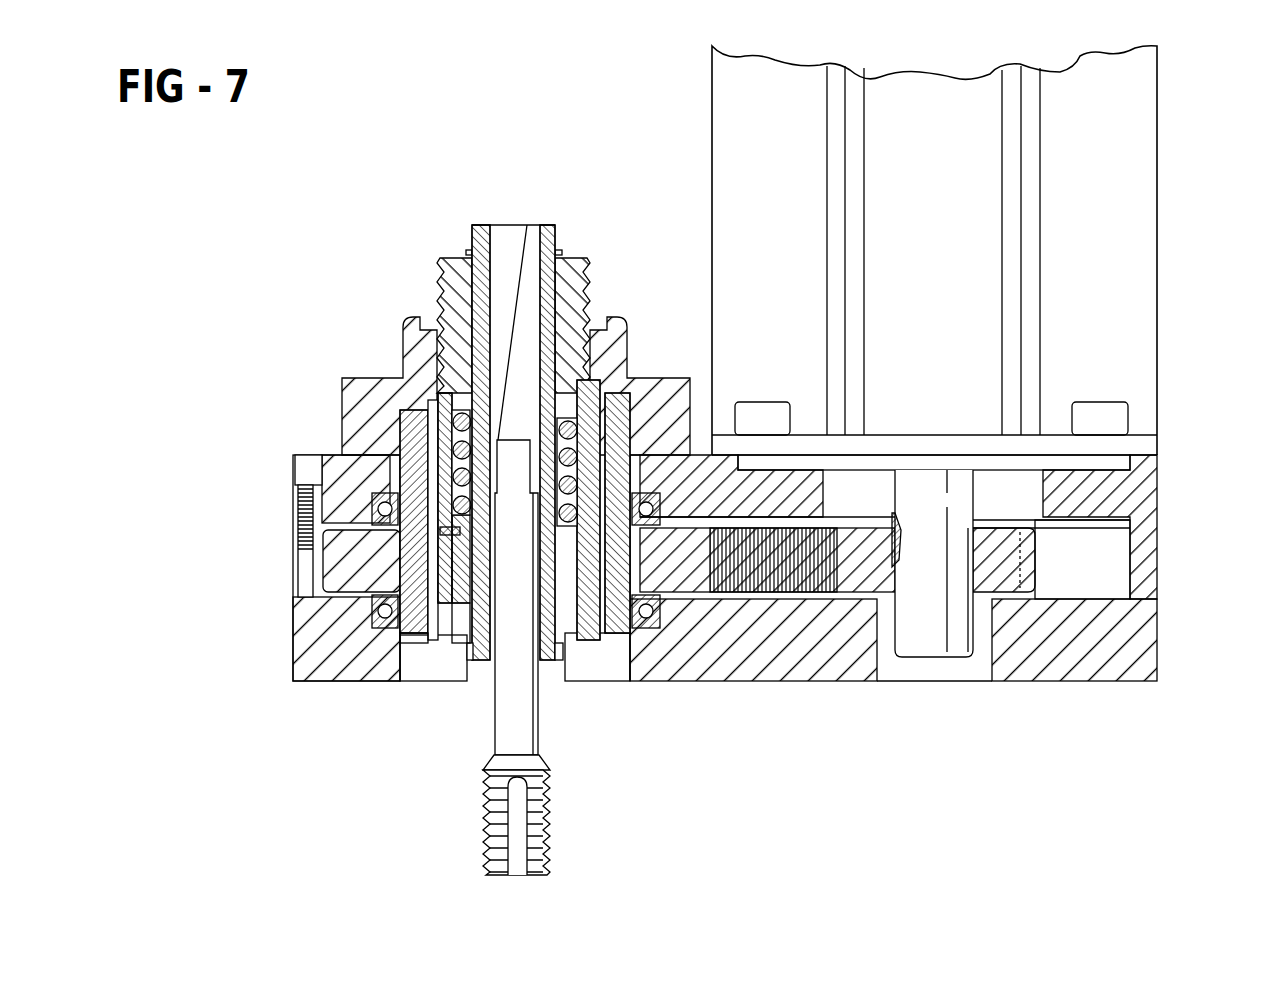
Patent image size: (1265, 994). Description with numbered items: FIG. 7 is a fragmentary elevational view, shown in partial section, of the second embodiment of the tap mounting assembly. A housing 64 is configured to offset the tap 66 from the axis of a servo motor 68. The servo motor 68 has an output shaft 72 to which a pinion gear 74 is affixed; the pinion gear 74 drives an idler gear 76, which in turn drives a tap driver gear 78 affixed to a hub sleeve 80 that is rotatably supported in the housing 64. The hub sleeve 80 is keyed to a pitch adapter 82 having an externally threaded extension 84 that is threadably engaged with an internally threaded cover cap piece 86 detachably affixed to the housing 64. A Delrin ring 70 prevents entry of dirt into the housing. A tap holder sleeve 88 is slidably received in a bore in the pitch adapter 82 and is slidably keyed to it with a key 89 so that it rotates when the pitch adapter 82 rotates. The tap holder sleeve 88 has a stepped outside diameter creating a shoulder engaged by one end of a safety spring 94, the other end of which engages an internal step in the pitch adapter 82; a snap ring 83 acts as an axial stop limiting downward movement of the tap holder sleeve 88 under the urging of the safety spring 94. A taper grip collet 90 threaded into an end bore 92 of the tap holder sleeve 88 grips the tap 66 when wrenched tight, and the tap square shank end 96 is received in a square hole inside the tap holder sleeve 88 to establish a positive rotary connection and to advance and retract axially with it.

The housing 64 is at (1059, 681).
The tap 66 is at (482, 823).
The servo motor 68 is at (1152, 201).
The Delrin ring 70 is at (598, 304).
The output shaft 72 is at (943, 552).
The pinion gear 74 is at (1010, 578).
The idler gear 76 is at (788, 568).
The tap driver gear 78 is at (356, 590).
The hub sleeve 80 is at (345, 408).
The pitch adapter 82 is at (402, 378).
The snap ring 83 is at (552, 232).
The externally threaded extension 84 is at (437, 286).
The cover cap piece 86 is at (340, 385).
The tap holder sleeve 88 is at (620, 372).
The key 89 is at (440, 531).
The taper grip collet 90 is at (462, 622).
The end bore 92 is at (432, 640).
The safety spring 94 is at (418, 432).
The tap square shank end 96 is at (527, 225).